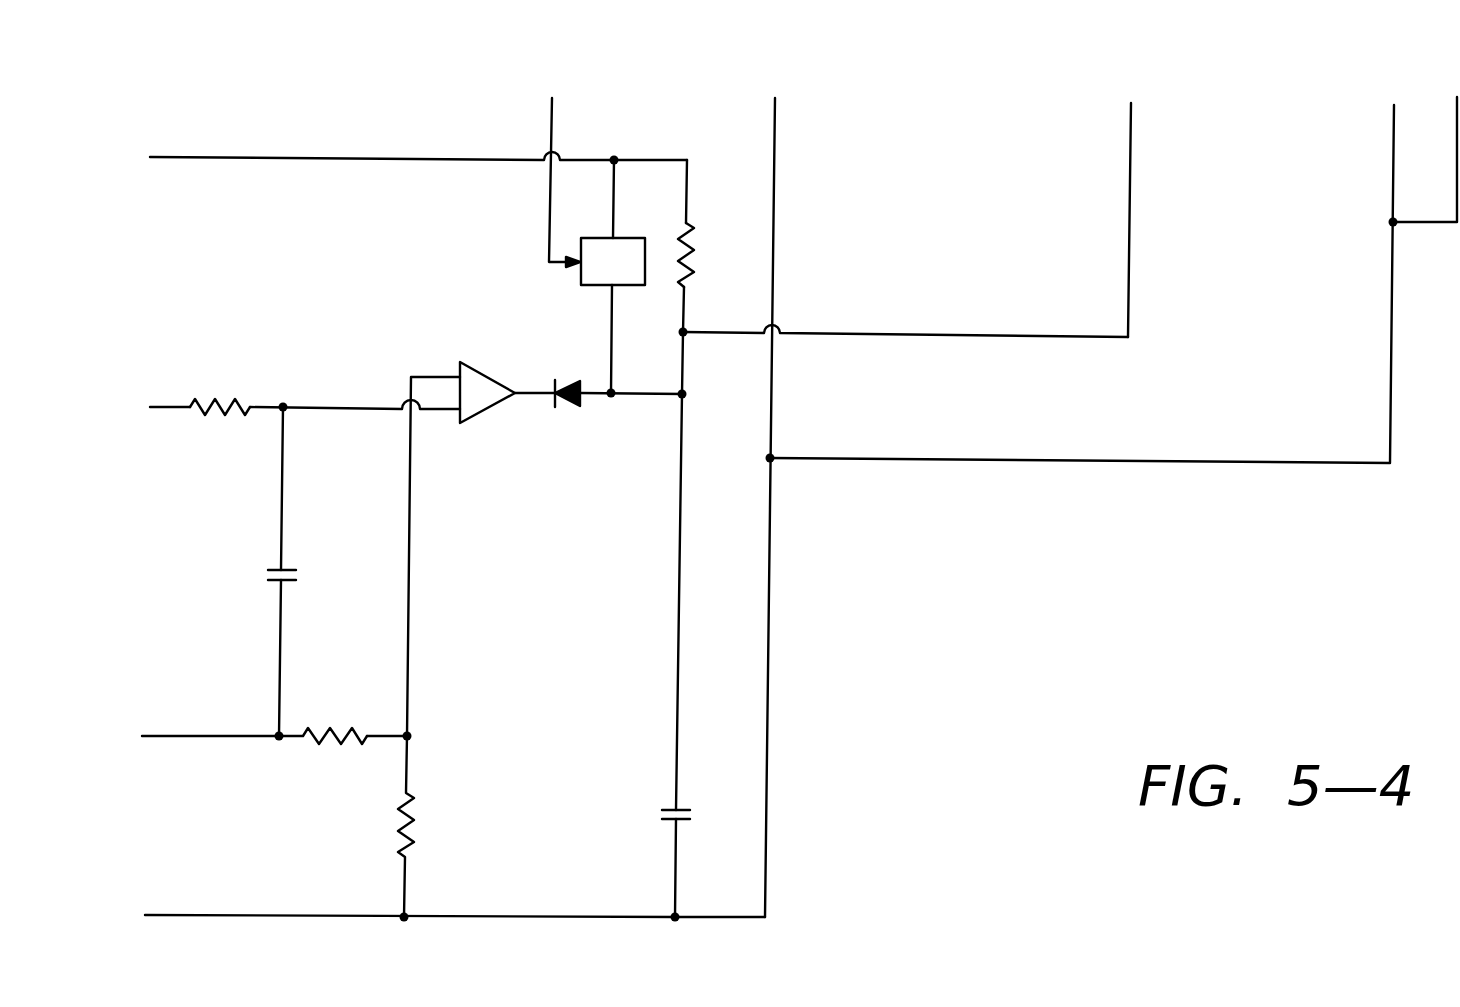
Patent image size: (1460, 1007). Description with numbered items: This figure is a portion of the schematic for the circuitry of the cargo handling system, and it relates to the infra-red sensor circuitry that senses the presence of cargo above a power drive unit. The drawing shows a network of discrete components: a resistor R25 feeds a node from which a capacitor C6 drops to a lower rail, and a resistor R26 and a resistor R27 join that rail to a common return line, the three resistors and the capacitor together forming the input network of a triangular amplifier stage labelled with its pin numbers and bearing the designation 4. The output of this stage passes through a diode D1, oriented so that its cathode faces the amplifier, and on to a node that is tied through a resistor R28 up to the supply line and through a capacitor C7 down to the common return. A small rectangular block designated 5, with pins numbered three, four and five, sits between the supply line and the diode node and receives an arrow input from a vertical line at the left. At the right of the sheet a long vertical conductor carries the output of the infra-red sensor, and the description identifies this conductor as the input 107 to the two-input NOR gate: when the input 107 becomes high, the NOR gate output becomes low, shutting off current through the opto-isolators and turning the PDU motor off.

The resistor R25 is at (220, 386).
The capacitor C6 is at (259, 577).
The resistor R26 is at (323, 716).
The resistor R27 is at (371, 826).
The resistor R28 is at (720, 255).
The capacitor C7 is at (650, 817).
The diode D1 is at (570, 378).
The timer/trigger block 5 is at (597, 211).
The comparator 4 is at (479, 397).
The input to the NOR gate 107 is at (1130, 182).